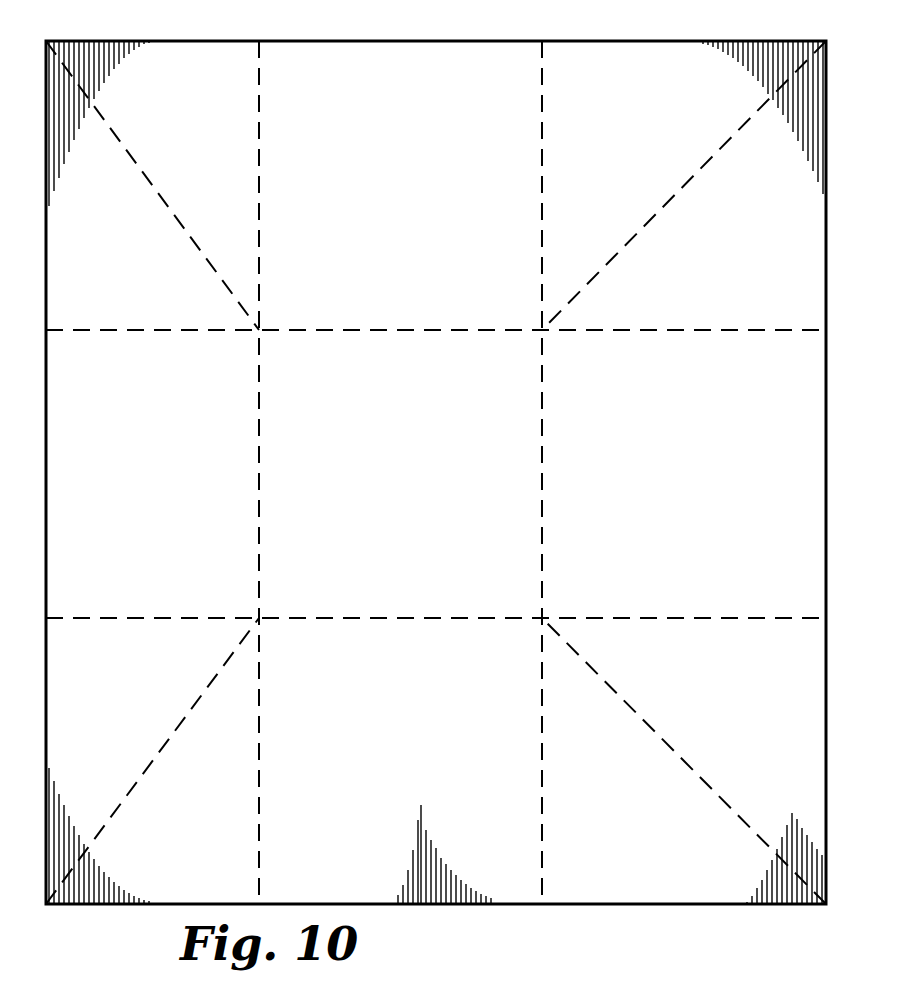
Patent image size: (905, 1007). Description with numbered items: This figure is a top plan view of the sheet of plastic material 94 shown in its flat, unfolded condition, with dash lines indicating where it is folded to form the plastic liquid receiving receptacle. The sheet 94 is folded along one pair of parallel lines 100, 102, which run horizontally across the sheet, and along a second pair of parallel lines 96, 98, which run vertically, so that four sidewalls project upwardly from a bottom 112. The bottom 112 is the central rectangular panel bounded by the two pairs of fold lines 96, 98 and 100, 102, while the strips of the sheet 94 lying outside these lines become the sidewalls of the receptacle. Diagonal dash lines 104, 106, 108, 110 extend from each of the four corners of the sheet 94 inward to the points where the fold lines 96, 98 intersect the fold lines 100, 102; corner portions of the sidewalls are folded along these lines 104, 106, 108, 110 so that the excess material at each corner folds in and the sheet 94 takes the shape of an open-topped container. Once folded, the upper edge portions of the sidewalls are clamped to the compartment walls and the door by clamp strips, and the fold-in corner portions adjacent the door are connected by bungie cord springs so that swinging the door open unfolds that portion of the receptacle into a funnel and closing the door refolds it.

The sheet of plastic material 94 is at (308, 41).
The fold line 96 is at (260, 243).
The fold line 98 is at (542, 205).
The fold line 100 is at (143, 330).
The fold line 102 is at (135, 617).
The corner fold line 104 is at (148, 176).
The corner fold line 106 is at (668, 204).
The corner fold line 108 is at (140, 777).
The corner fold line 110 is at (703, 782).
The bottom 112 is at (292, 470).